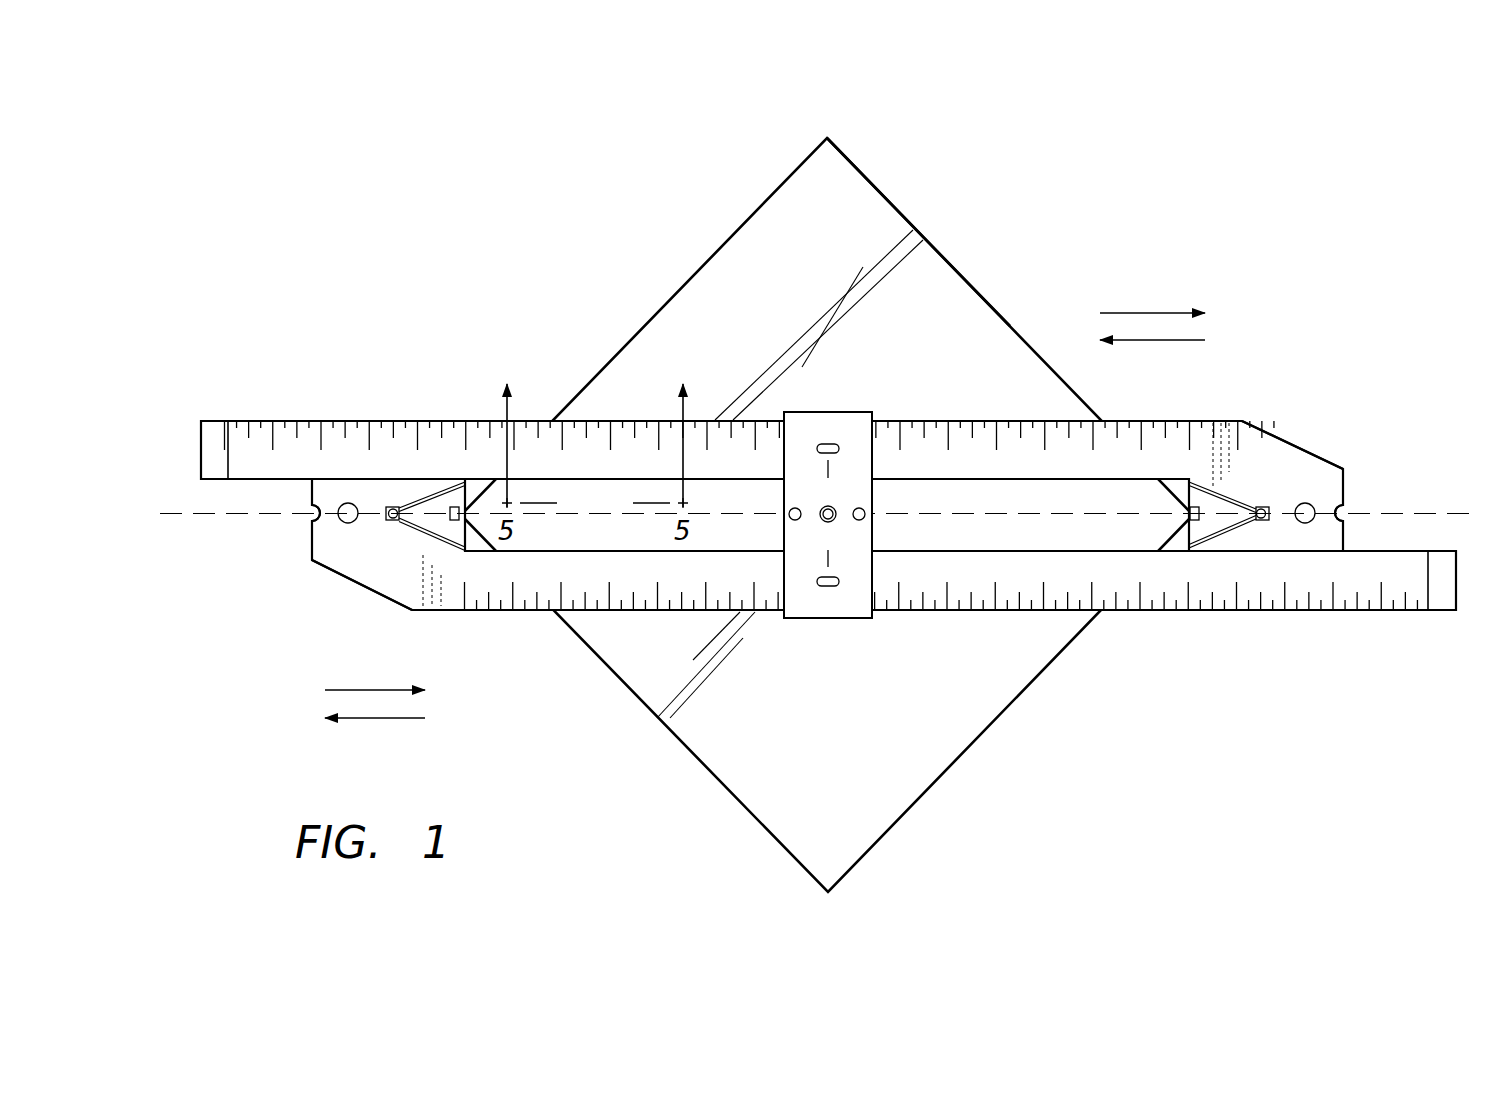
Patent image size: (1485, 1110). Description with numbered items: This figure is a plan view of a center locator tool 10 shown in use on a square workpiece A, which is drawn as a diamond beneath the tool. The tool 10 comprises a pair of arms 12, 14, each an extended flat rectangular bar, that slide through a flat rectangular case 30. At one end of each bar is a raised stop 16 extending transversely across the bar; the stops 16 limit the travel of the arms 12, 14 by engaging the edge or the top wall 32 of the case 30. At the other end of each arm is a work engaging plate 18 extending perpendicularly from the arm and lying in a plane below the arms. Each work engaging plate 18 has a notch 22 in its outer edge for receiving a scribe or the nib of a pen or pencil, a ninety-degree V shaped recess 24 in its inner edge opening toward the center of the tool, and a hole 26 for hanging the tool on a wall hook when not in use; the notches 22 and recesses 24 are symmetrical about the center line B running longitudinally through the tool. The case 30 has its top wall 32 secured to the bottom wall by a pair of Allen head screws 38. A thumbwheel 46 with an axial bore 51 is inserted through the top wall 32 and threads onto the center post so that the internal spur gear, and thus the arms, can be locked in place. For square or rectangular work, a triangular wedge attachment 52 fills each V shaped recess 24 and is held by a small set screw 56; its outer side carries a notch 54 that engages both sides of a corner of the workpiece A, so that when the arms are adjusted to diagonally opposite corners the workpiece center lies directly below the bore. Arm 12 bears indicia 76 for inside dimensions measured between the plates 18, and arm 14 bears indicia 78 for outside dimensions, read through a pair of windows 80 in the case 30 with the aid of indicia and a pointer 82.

The center locator tool 10 is at (372, 243).
The arm 12 is at (263, 421).
The arm 14 is at (955, 611).
The raised stop 16 is at (213, 470).
The work engaging plate 18 is at (410, 608).
The notch 22 is at (310, 518).
The V shaped recess 24 is at (396, 545).
The hole 26 is at (312, 560).
The rectangular case 30 is at (827, 515).
The top wall 32 is at (827, 615).
The Allen head screws 38 is at (793, 507).
The thumbwheel 46 is at (836, 507).
The bore 51 is at (822, 519).
The wedge attachment 52 is at (385, 507).
The notch 54 is at (452, 552).
The set screw 56 is at (393, 507).
The indicia 76 is at (945, 421).
The indicia 78 is at (715, 612).
The windows 80 is at (840, 449).
The pointer 82 is at (866, 575).
The square workpiece A is at (882, 188).
The center line B is at (1447, 513).